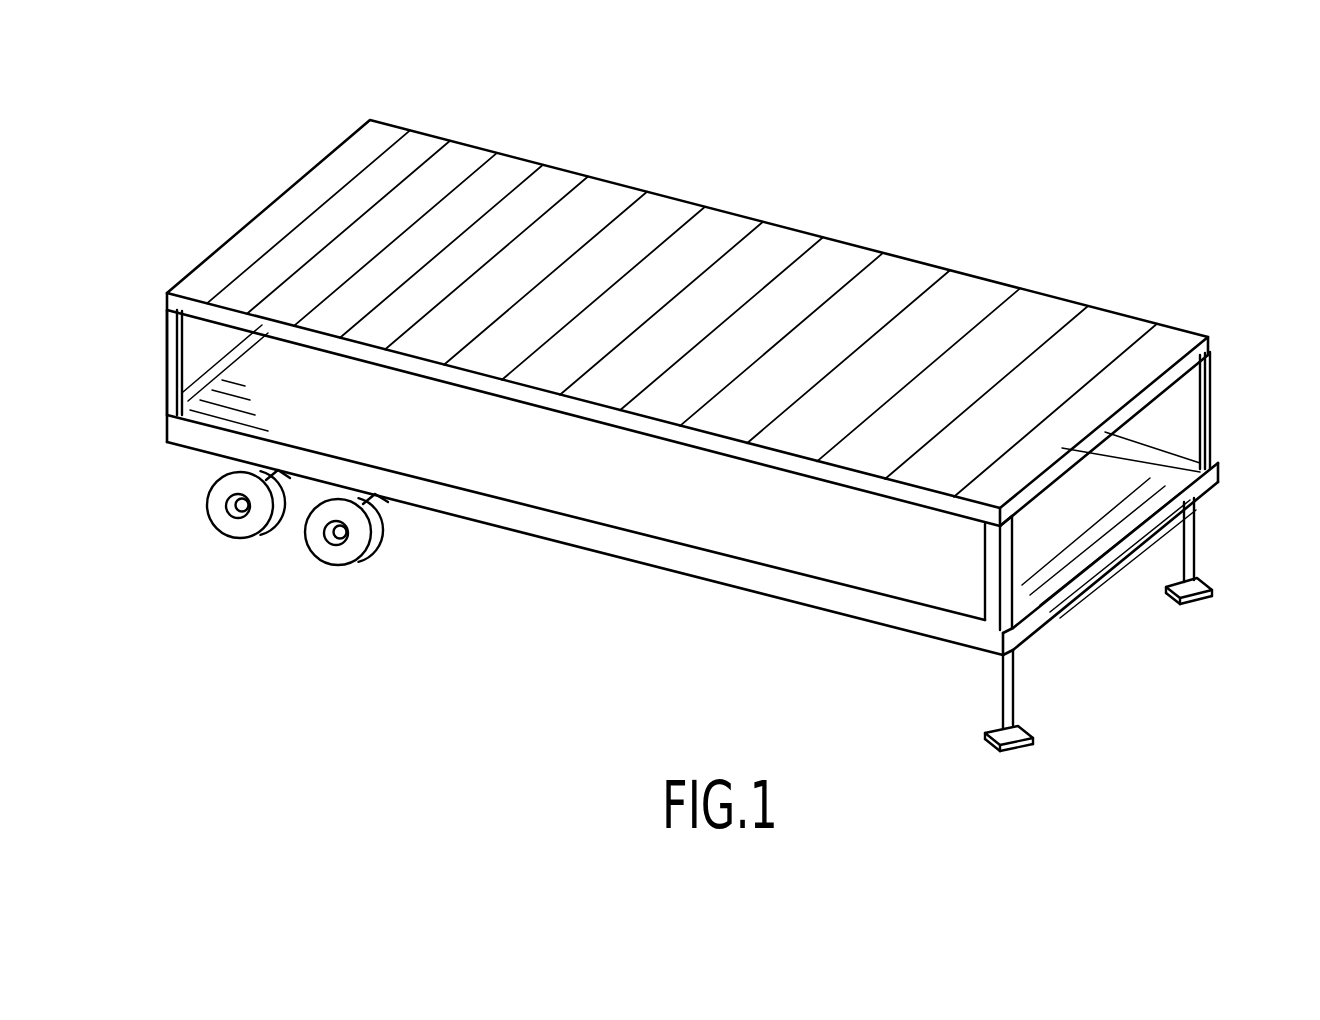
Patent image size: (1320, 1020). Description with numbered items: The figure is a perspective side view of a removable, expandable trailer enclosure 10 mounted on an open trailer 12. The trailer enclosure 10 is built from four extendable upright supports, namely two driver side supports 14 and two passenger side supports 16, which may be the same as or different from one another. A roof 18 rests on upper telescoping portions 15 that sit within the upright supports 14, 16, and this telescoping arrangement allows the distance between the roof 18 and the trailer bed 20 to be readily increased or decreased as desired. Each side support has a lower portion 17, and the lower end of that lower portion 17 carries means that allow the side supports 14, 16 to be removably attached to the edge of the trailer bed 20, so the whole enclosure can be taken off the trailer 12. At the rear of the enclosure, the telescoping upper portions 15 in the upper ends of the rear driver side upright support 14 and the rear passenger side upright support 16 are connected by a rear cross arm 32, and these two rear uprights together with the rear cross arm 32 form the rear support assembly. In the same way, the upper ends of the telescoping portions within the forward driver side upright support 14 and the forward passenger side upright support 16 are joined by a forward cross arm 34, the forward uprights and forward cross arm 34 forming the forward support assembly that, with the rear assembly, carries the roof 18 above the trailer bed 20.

The trailer enclosure 10 is at (694, 421).
The open trailer 12 is at (652, 525).
The driver side support 14 is at (1207, 398).
The upper telescoping portion 15 is at (168, 318).
The passenger side support 16 is at (167, 414).
The lower portion 17 is at (170, 388).
The roof 18 is at (687, 308).
The trailer bed 20 is at (867, 525).
The rear cross arm 32 is at (293, 187).
The forward cross arm 34 is at (1093, 447).